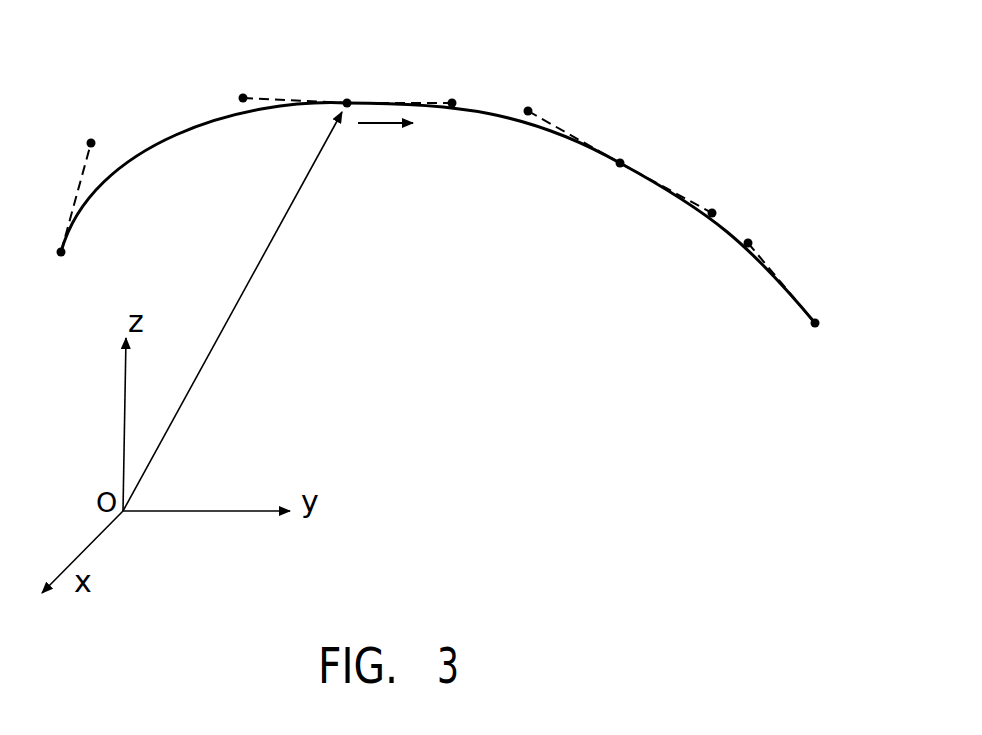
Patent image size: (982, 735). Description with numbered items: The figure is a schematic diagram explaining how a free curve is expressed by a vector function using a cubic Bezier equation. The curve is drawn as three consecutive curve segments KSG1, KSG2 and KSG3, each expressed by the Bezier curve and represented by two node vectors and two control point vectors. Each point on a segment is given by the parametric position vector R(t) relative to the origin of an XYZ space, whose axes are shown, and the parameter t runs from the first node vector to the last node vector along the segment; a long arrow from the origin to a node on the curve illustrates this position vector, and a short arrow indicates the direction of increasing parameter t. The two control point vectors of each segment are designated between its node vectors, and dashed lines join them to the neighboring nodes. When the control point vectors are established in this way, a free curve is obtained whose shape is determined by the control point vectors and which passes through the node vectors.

The curve segment KSG3 is at (204, 177).
The curve segment KSG2 is at (522, 127).
The curve segment KSG1 is at (730, 242).
The parameter t is at (378, 146).